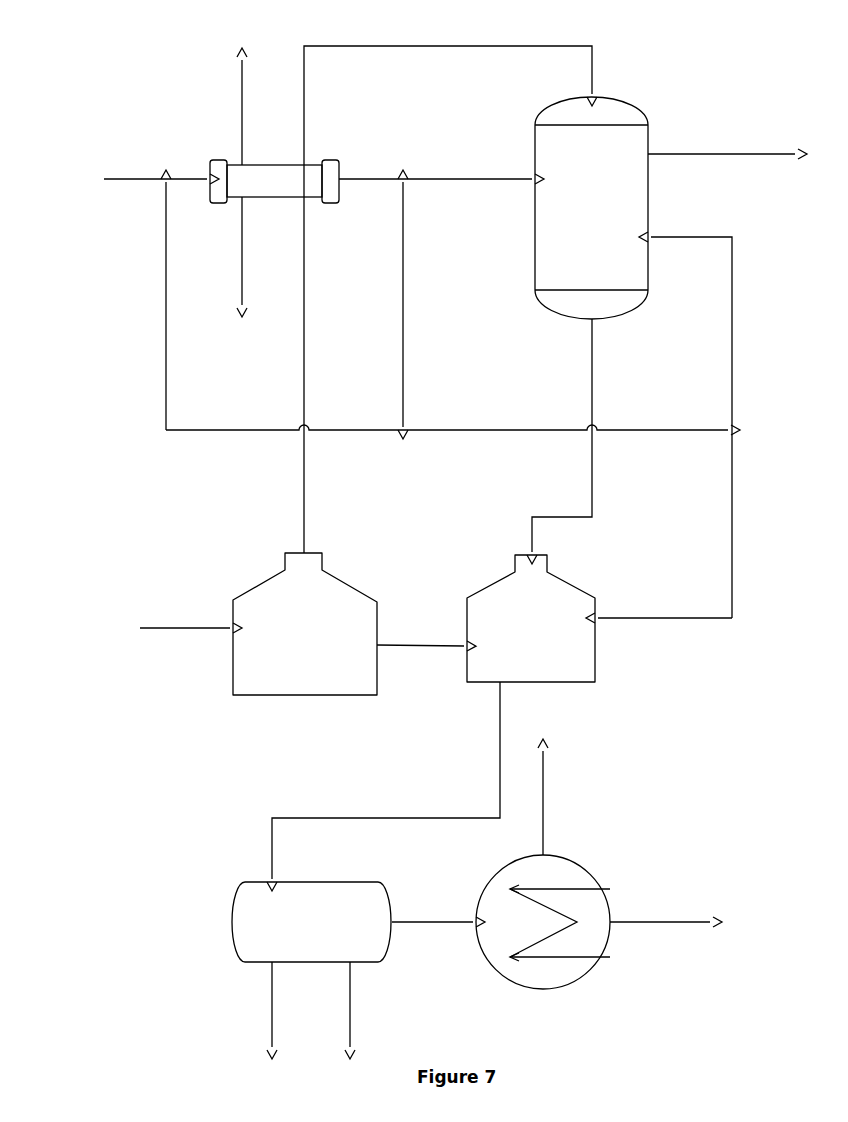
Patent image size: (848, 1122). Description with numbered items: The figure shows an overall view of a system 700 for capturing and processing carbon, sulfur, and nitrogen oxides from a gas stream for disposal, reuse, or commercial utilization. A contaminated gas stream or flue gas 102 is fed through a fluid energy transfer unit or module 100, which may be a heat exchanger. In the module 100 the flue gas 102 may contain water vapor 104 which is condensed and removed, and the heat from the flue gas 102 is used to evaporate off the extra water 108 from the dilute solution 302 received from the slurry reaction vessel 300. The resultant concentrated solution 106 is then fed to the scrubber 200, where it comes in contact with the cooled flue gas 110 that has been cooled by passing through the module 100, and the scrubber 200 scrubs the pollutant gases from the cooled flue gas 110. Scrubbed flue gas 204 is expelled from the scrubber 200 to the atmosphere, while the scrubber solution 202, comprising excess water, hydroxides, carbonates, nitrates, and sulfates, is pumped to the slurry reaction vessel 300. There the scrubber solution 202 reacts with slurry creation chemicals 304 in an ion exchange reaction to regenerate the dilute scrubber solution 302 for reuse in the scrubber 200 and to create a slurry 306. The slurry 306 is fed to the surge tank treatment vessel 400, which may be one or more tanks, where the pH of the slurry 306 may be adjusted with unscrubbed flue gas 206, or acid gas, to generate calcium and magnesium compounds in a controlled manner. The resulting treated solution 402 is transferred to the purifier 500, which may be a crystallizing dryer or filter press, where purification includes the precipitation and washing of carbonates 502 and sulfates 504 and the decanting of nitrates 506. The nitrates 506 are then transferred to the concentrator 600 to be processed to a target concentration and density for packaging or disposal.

The system 700 is at (130, 78).
The fluid energy transfer unit or module 100 is at (290, 190).
The contaminated gas stream or flue gas 102 is at (180, 177).
The water vapor 104 is at (235, 222).
The concentrated solution 106 is at (487, 50).
The extra water 108 is at (235, 138).
The cooled flue gas 110 is at (378, 167).
The scrubber 200 is at (612, 220).
The scrubber solution 202 is at (592, 405).
The scrubbed flue gas 204 is at (770, 150).
The unscrubbed flue gas 206 is at (143, 293).
The slurry reaction vessel 300 is at (321, 655).
The solution 302 is at (304, 348).
The slurry creation chemicals 304 is at (178, 620).
The slurry 306 is at (438, 612).
The surge tank treatment vessel 400 is at (547, 640).
The treated solution 402 is at (460, 815).
The purifier 500 is at (328, 940).
The carbonates 502 is at (262, 1040).
The sulfates 504 is at (355, 1033).
The nitrates 506 is at (437, 915).
The concentrator 600 is at (529, 930).